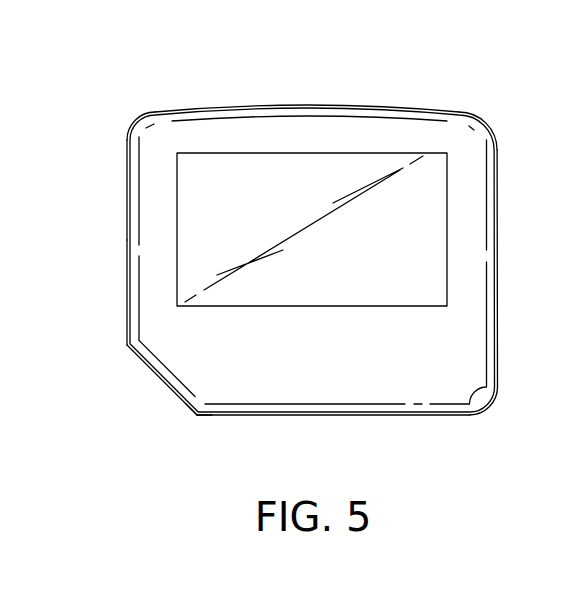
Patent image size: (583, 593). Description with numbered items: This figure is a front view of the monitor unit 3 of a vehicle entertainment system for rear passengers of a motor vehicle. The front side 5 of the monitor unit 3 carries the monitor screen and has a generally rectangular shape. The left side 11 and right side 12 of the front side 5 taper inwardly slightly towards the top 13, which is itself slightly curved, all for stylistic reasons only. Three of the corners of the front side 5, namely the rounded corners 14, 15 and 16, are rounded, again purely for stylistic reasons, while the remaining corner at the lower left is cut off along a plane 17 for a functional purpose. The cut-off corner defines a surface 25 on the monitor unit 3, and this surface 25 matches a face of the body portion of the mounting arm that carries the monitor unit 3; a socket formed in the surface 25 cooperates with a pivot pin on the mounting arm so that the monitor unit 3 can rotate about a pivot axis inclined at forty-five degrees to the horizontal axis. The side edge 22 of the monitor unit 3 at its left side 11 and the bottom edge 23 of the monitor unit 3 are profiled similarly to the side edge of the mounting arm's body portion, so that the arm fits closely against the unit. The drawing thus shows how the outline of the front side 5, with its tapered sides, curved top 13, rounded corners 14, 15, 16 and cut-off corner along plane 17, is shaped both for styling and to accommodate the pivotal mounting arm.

The monitor unit 3 is at (208, 99).
The front side 5 is at (473, 382).
The left side 11 is at (130, 187).
The right side 12 is at (498, 277).
The top 13 is at (377, 105).
The rounded corner 14 is at (138, 118).
The rounded corner 15 is at (484, 122).
The rounded corner 16 is at (492, 403).
The plane 17 is at (187, 408).
The side edge 22 is at (125, 272).
The bottom edge 23 is at (330, 418).
The surface 25 is at (128, 347).